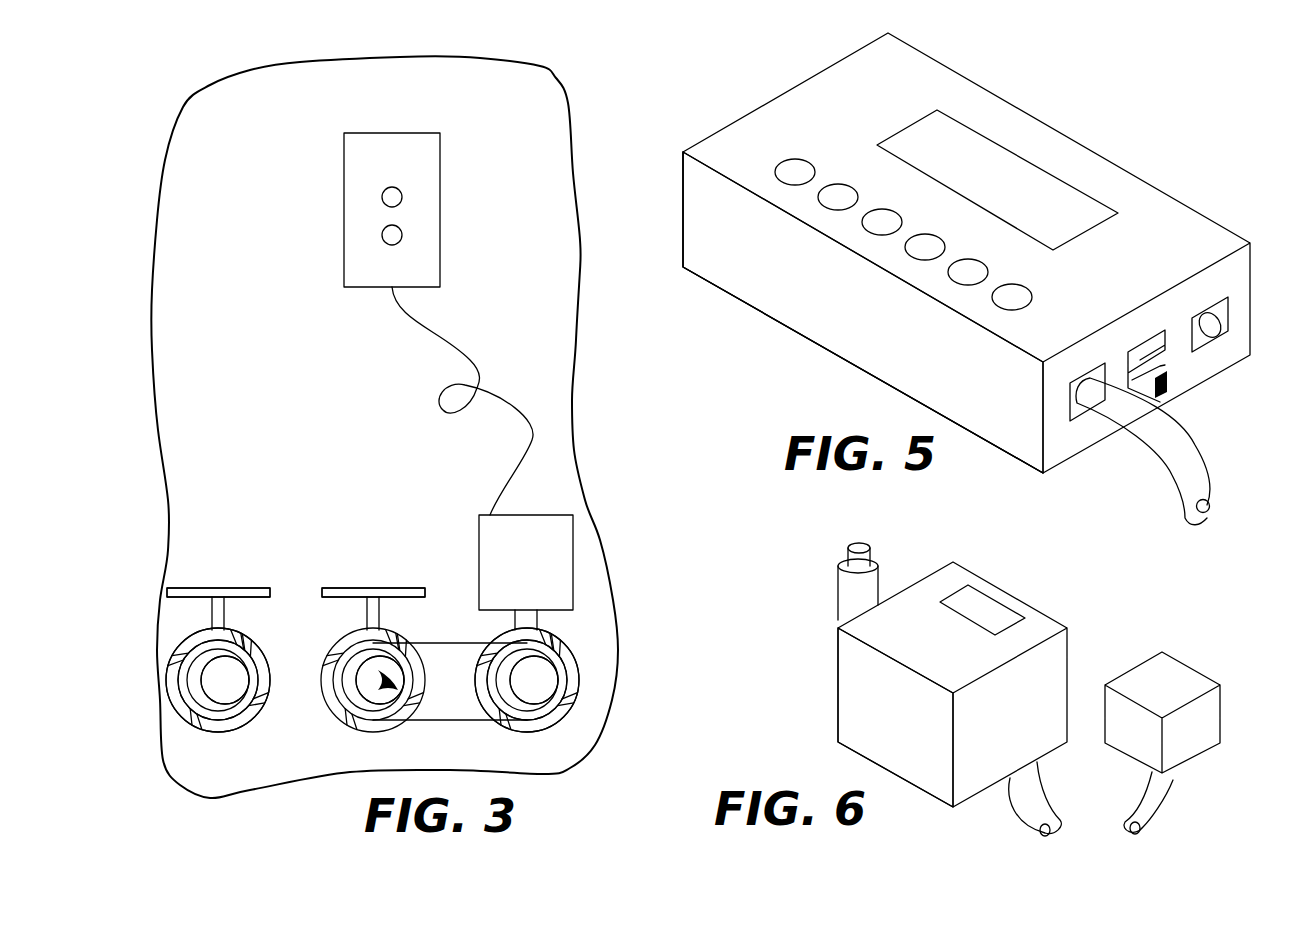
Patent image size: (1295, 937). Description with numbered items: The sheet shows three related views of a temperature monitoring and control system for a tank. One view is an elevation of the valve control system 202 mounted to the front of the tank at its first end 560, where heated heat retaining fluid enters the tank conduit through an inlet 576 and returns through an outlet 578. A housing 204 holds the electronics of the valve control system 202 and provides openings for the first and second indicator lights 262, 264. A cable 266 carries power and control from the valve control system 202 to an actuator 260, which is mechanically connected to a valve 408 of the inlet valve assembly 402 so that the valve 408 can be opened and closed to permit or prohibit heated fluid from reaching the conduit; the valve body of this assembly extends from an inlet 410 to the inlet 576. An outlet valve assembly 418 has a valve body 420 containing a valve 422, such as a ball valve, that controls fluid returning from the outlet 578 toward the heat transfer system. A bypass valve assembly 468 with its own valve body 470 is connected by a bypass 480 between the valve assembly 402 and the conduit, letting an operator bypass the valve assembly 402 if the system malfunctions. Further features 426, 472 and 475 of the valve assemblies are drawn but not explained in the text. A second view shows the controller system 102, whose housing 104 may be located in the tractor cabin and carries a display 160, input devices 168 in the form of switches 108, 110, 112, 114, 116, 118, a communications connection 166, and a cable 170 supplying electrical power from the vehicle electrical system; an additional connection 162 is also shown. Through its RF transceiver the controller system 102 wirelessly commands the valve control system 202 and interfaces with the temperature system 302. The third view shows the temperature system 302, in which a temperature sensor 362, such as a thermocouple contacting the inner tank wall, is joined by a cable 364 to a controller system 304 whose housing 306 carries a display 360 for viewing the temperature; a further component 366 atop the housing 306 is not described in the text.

In FIG. 5, the controller system 102 is at (1105, 136).
In FIG. 5, the housing 104 is at (683, 152).
In FIG. 5, the switch 108 is at (788, 185).
In FIG. 5, the switch 110 is at (830, 210).
In FIG. 5, the switch 112 is at (873, 235).
In FIG. 5, the switch 114 is at (916, 260).
In FIG. 5, the switch 116 is at (960, 285).
In FIG. 5, the switch 118 is at (1004, 310).
In FIG. 5, the display 160 is at (940, 112).
In FIG. 5, the connector port 162 is at (1148, 335).
In FIG. 5, the communications connection 166 is at (1212, 300).
In FIG. 5, the input devices 168 is at (855, 320).
In FIG. 5, the cable 170 is at (1185, 480).
In FIG. 3, the valve control system 202 is at (322, 340).
In FIG. 3, the housing 204 is at (441, 133).
In FIG. 3, the actuator 260 is at (573, 530).
In FIG. 3, the first indicator light 262 is at (382, 235).
In FIG. 3, the second indicator light 264 is at (402, 197).
In FIG. 3, the cable 266 is at (452, 418).
In FIG. 6, the temperature system 302 is at (1100, 650).
In FIG. 6, the controller system 304 is at (838, 630).
In FIG. 6, the housing 306 is at (850, 706).
In FIG. 6, the display 360 is at (1000, 602).
In FIG. 6, the temperature sensor 362 is at (1190, 678).
In FIG. 6, the cable 364 is at (1030, 795).
In FIG. 6, the connector 366 is at (845, 566).
In FIG. 3, the valve assembly 402 is at (596, 640).
In FIG. 3, the valve 408 is at (530, 683).
In FIG. 3, the inlet 410 is at (540, 722).
In FIG. 3, the outlet valve assembly 418 is at (220, 572).
In FIG. 3, the valve body 420 is at (236, 588).
In FIG. 3, the valve 422 is at (235, 688).
In FIG. 3, the valve ring 426 is at (232, 722).
In FIG. 3, the bypass valve assembly 468 is at (345, 572).
In FIG. 3, the valve body 470 is at (382, 588).
In FIG. 3, the valve opening 472 is at (390, 690).
In FIG. 3, the valve flap 475 is at (392, 720).
In FIG. 3, the bypass 480 is at (455, 653).
In FIG. 3, the first end 560 is at (555, 343).
In FIG. 3, the inlet 576 is at (553, 652).
In FIG. 3, the outlet 578 is at (256, 668).